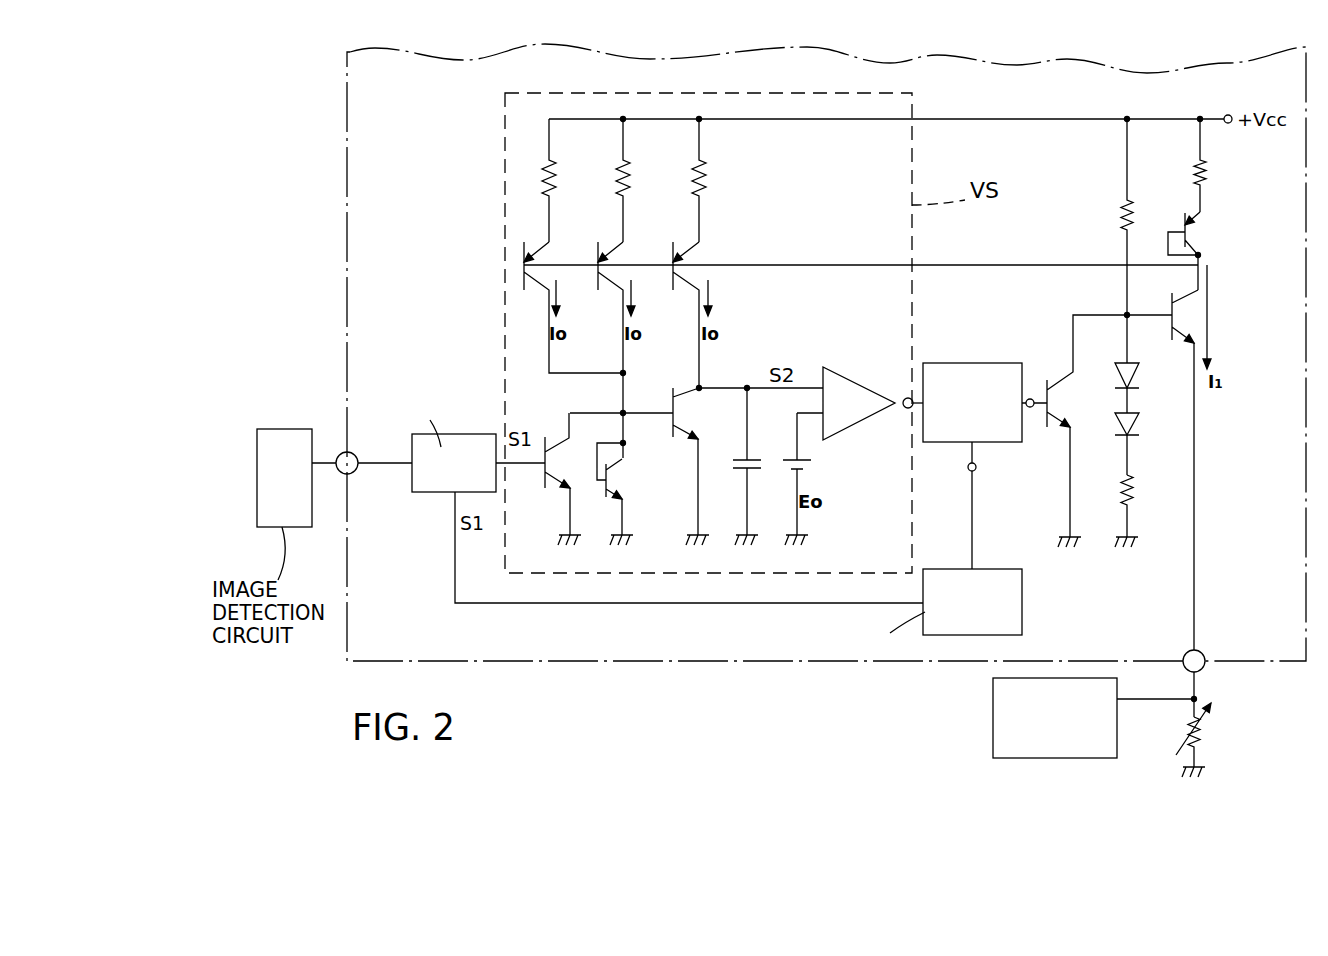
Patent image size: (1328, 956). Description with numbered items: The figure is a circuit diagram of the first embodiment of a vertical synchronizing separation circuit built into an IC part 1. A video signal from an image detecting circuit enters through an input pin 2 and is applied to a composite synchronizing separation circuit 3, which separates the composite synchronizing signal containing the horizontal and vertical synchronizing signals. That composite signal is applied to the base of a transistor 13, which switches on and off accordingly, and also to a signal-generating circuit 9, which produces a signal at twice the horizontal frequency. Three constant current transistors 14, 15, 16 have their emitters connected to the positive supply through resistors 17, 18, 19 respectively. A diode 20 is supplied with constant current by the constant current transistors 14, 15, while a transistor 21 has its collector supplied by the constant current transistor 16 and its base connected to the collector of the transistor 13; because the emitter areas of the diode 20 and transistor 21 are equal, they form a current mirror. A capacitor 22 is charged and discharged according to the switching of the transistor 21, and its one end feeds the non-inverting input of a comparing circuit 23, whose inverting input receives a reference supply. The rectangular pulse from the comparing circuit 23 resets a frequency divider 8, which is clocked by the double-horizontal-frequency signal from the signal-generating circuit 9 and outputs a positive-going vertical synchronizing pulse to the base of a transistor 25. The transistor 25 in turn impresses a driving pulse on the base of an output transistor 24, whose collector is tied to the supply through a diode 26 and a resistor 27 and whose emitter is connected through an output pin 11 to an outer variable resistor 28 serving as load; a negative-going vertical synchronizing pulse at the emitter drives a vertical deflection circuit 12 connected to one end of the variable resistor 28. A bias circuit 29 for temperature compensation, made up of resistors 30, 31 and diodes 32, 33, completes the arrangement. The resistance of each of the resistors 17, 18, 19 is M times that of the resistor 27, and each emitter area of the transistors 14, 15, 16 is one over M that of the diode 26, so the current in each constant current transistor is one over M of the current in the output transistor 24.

The IC part 1 is at (570, 663).
The input pin 2 is at (343, 476).
The composite synchronizing separation circuit 3 is at (430, 495).
The frequency divider 8 is at (937, 447).
The signal-generating circuit 9 is at (1022, 608).
The output pin 11 is at (1205, 665).
The vertical deflection circuit 12 is at (993, 706).
The transistor 13 is at (553, 483).
The constant current transistor 14 is at (527, 283).
The constant current transistor 15 is at (601, 283).
The constant current transistor 16 is at (676, 283).
The resistor 17 is at (545, 172).
The resistor 18 is at (616, 174).
The resistor 19 is at (692, 174).
The diode 20 is at (612, 470).
The transistor 21 is at (682, 418).
The capacitor 22 is at (752, 458).
The comparing circuit 23 is at (855, 427).
The output transistor 24 is at (1186, 302).
The transistor 25 is at (1045, 418).
The diode 26 is at (1192, 228).
The resistor 27 is at (1208, 176).
The outer variable resistor 28 is at (1205, 737).
The bias circuit 29 is at (1178, 380).
The resistor 30 is at (1118, 222).
The resistor 31 is at (1132, 490).
The diode 32 is at (1132, 386).
The diode 33 is at (1132, 434).